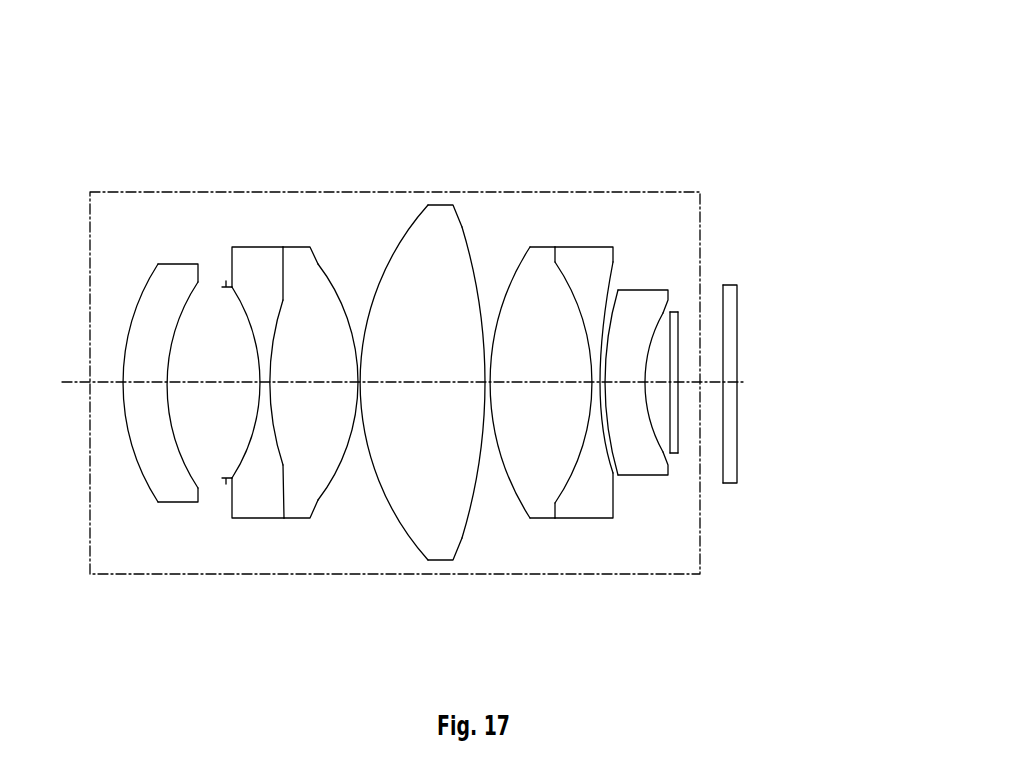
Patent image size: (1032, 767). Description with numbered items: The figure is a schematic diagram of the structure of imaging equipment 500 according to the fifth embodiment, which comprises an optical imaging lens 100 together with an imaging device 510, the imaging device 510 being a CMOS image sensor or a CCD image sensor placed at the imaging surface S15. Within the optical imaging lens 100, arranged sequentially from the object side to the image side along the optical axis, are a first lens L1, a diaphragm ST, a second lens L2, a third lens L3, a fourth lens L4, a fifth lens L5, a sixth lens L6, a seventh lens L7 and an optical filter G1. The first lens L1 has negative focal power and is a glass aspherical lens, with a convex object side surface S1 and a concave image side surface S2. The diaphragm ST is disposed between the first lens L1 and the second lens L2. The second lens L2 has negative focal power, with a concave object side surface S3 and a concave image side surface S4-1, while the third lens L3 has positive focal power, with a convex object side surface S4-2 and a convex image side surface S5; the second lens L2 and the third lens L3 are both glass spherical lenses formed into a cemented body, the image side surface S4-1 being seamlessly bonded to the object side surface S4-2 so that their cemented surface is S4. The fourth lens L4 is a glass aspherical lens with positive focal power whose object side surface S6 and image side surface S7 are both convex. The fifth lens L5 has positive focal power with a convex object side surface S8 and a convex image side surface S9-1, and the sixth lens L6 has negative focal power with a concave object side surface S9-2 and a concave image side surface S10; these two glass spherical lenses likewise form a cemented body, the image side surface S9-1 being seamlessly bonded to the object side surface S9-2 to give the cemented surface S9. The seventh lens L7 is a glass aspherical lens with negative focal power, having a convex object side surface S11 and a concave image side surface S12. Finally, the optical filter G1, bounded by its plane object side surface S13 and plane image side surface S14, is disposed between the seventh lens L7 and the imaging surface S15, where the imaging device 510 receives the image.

The imaging equipment 500 is at (55, 190).
The optical imaging lens 100 is at (93, 190).
The first lens L1 is at (160, 280).
The second lens L2 is at (237, 262).
The third lens L3 is at (322, 290).
The fourth lens L4 is at (460, 255).
The fifth lens L5 is at (542, 272).
The sixth lens L6 is at (612, 262).
The seventh lens L7 is at (650, 303).
The diaphragm ST is at (224, 483).
The optical filter G1 is at (677, 327).
The imaging device 510 is at (732, 323).
The object side surface of the first lens S1 is at (138, 458).
The image side surface of the first lens S2 is at (183, 458).
The object side surface of the second lens S3 is at (240, 458).
The cemented surface of the second lens and the third lens S4 is at (300, 73).
The image side surface of the second lens S4-1 is at (273, 323).
The object side surface of the third lens S4-2 is at (276, 323).
The image side surface of the third lens S5 is at (345, 457).
The object side surface of the fourth lens S6 is at (390, 510).
The image side surface of the fourth lens S7 is at (477, 483).
The object side surface of the fifth lens S8 is at (513, 502).
The cemented surface of the fifth lens and the sixth lens S9 is at (638, 72).
The image side surface of the fifth lens S9-1 is at (585, 323).
The object side surface of the sixth lens S9-2 is at (588, 348).
The image side surface of the sixth lens S10 is at (602, 410).
The object side surface of the seventh lens S11 is at (605, 413).
The image side surface of the seventh lens S12 is at (645, 410).
The object side surface of the optical filter S13 is at (673, 452).
The image side surface of the optical filter S14 is at (680, 448).
The imaging surface S15 is at (723, 387).